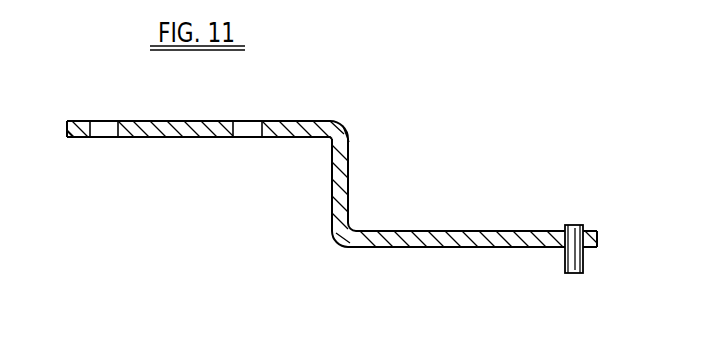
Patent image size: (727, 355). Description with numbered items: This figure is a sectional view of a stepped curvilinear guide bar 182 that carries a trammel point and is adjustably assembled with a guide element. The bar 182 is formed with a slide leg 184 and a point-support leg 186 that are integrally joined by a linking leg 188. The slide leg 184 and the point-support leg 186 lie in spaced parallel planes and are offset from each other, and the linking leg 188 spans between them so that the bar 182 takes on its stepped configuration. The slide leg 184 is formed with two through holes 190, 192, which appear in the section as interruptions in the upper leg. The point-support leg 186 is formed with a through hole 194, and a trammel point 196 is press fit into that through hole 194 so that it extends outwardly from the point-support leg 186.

The stepped curvilinear guide bar 182 is at (341, 202).
The slide leg 184 is at (173, 130).
The point-support leg 186 is at (450, 247).
The linking leg 188 is at (350, 197).
The through hole 190 is at (90, 130).
The through hole 192 is at (262, 124).
The through hole 194 is at (570, 232).
The trammel point 196 is at (583, 265).